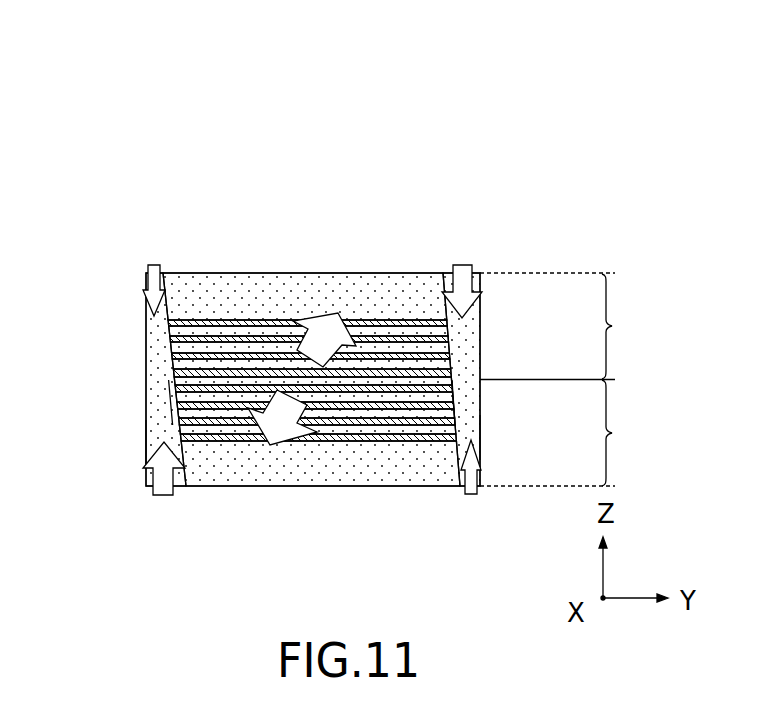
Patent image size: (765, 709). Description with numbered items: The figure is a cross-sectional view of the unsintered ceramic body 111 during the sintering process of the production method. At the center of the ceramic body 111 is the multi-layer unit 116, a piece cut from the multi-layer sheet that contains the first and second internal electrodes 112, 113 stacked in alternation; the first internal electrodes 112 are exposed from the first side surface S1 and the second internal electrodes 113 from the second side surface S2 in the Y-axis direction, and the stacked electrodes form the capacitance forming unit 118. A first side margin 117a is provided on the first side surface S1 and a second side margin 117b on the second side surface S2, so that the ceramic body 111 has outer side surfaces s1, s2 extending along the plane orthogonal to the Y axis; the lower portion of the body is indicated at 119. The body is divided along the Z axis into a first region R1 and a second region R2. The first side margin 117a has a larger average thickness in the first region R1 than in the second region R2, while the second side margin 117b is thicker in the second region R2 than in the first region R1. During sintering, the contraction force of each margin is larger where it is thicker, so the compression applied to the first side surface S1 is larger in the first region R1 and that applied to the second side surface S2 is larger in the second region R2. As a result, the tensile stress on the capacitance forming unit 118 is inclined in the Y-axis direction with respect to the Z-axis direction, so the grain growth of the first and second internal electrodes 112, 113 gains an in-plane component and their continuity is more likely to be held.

The ceramic body 111 is at (460, 122).
The first internal electrodes 112 is at (193, 412).
The second internal electrodes 113 is at (372, 412).
The multi-layer unit 116 is at (385, 236).
The first side margin 117a is at (160, 358).
The second side margin 117b is at (467, 358).
The capacitance forming unit 118 is at (258, 421).
The bottom portion 119 is at (425, 473).
The first side surface S1 is at (168, 402).
The second side surface S2 is at (460, 403).
The side surface s1 is at (147, 442).
The side surface s2 is at (478, 437).
The first region R1 is at (566, 433).
The second region R2 is at (566, 326).